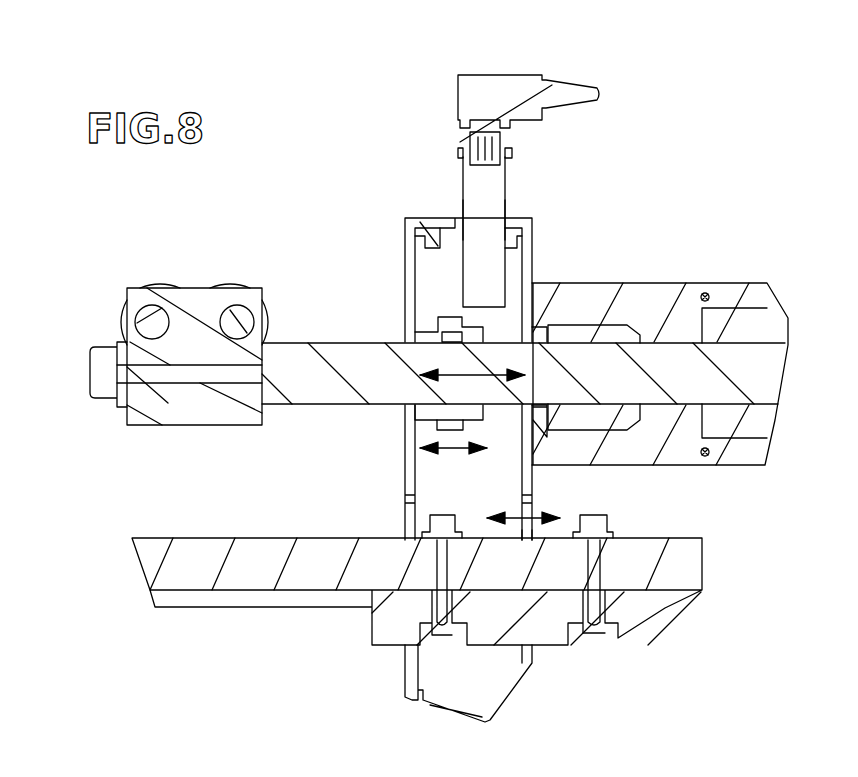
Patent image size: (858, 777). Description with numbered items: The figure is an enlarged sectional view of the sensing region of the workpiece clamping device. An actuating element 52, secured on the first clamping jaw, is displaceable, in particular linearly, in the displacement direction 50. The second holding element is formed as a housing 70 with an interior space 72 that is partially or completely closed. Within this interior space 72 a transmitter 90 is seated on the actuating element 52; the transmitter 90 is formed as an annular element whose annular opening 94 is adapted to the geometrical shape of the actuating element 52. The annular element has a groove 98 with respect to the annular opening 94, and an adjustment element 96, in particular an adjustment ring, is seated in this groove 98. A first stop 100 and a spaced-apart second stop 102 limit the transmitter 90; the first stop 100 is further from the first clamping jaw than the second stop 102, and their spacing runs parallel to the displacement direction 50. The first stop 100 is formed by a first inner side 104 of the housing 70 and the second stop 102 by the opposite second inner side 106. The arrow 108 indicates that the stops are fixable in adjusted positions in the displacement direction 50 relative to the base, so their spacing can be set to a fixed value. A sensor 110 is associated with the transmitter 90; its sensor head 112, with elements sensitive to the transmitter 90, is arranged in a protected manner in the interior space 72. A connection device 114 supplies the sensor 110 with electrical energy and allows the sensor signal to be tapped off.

The displacement direction 50 is at (390, 350).
The actuating element 52 is at (283, 358).
The housing 70 is at (533, 268).
The interior space 72 is at (430, 483).
The transmitter 90 is at (545, 320).
The annular opening 94 is at (428, 405).
The adjustment element 96 is at (433, 411).
The groove 98 is at (417, 308).
The first stop 100 is at (533, 300).
The second stop 102 is at (415, 311).
The first inner side 104 is at (490, 217).
The second inner side 106 is at (452, 333).
The arrow 108 is at (537, 522).
The sensor 110 is at (510, 240).
The sensor head 112 is at (485, 292).
The connection device 114 is at (497, 88).